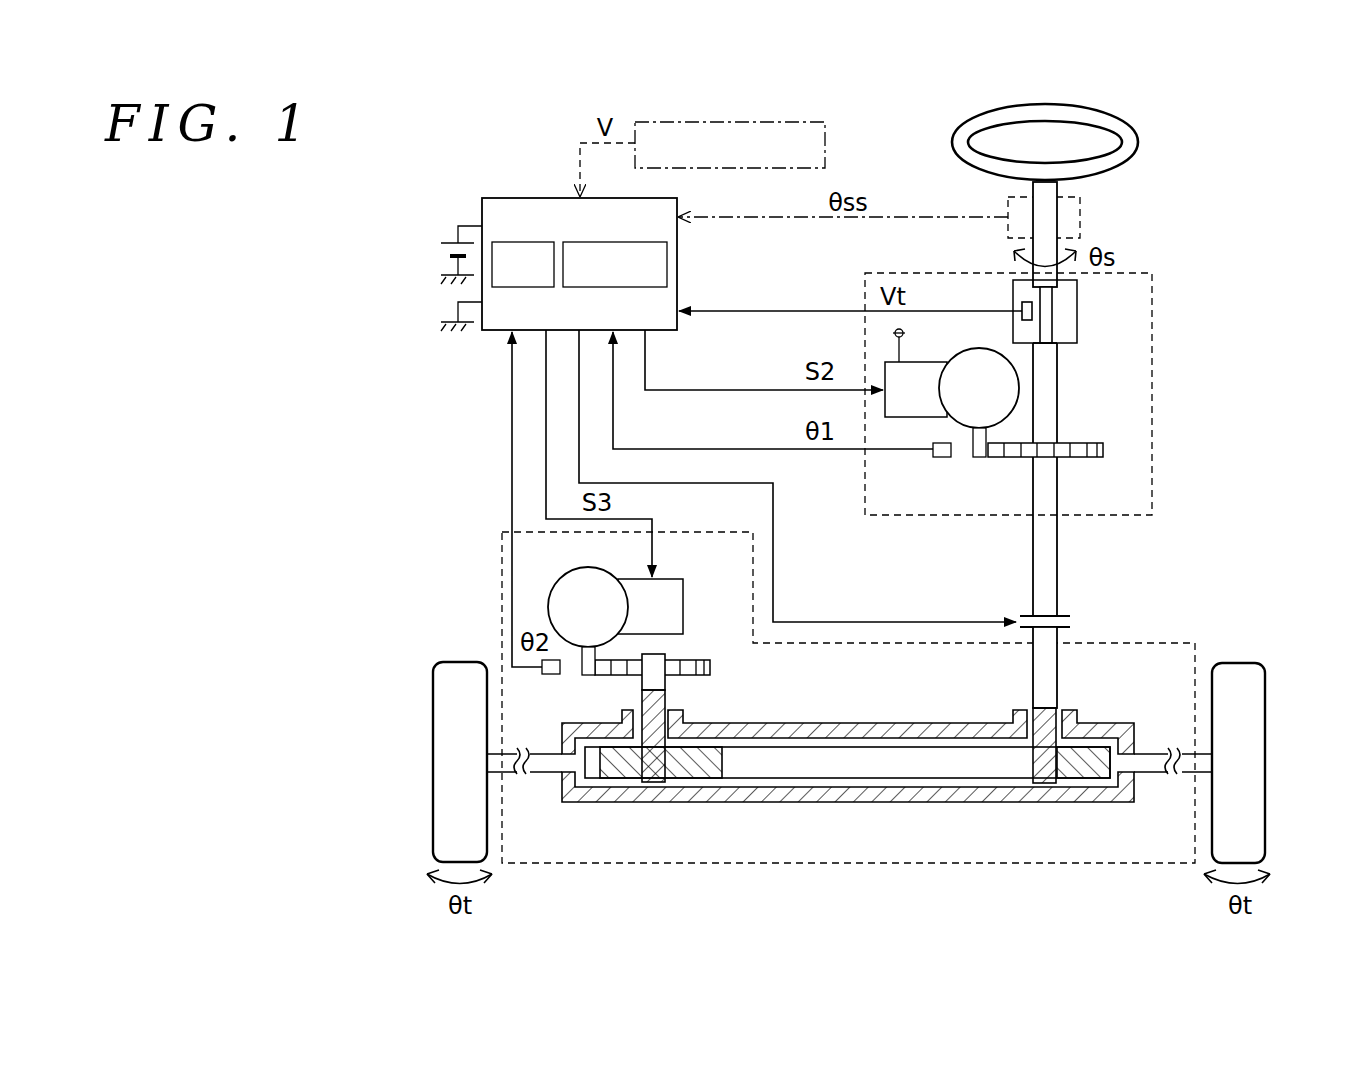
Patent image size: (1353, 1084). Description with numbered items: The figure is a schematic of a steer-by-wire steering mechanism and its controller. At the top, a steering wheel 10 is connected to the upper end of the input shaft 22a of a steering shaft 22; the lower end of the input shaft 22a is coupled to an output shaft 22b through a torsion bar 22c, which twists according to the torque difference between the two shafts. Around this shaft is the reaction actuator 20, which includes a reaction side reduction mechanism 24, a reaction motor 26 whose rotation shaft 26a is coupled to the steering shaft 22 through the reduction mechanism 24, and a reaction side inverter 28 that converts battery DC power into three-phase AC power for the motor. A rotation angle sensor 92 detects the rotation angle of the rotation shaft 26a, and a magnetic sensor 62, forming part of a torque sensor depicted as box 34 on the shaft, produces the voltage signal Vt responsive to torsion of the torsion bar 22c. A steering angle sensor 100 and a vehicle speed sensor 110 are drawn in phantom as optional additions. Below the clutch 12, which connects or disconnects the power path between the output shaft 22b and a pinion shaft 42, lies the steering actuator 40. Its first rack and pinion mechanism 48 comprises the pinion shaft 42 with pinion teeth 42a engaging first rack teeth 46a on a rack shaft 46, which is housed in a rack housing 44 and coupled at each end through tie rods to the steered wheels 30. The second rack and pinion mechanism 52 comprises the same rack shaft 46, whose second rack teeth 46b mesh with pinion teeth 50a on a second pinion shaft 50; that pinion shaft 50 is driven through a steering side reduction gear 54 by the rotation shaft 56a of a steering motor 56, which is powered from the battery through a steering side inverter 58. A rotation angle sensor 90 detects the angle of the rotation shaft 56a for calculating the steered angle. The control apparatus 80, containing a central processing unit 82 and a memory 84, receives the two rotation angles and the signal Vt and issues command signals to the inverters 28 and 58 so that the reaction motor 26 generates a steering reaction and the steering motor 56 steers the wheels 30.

The steering wheel 10 is at (1138, 128).
The clutch 12 is at (1082, 620).
The reaction actuator 20 is at (1152, 340).
The steering shaft 22 is at (1080, 479).
The input shaft 22a is at (1048, 225).
The output shaft 22b is at (1057, 372).
The torsion bar 22c is at (1052, 330).
The reaction side reduction mechanism 24 is at (1093, 443).
The reaction motor 26 is at (1002, 352).
The rotation shaft 26a is at (980, 458).
The reaction side inverter 28 is at (918, 355).
The steered wheels 30 is at (460, 662).
The torque sensor 34 is at (1077, 292).
The steering actuator 40 is at (1066, 864).
The pinion shaft 42 is at (1057, 668).
The pinion teeth 42a is at (1048, 710).
The rack housing 44 is at (1118, 724).
The rack shaft 46 is at (847, 796).
The first rack teeth 46a is at (1085, 772).
The second rack teeth 46b is at (721, 772).
The first rack and pinion mechanism 48 is at (1038, 806).
The pinion shaft 50 is at (642, 689).
The pinion teeth 50a is at (665, 700).
The second rack and pinion mechanism 52 is at (659, 806).
The steering side reduction gear 54 is at (700, 660).
The steering motor 56 is at (580, 568).
The rotation shaft 56a is at (588, 676).
The steering side inverter 58 is at (683, 582).
The magnetic sensor 62 is at (1022, 306).
The control apparatus 80 is at (677, 283).
The central processing unit 82 is at (513, 242).
The memory 84 is at (604, 242).
The rotation angle sensor 90 is at (551, 675).
The rotation angle sensor 92 is at (938, 457).
The steering angle sensor 100 is at (1080, 212).
The vehicle speed sensor 110 is at (825, 152).